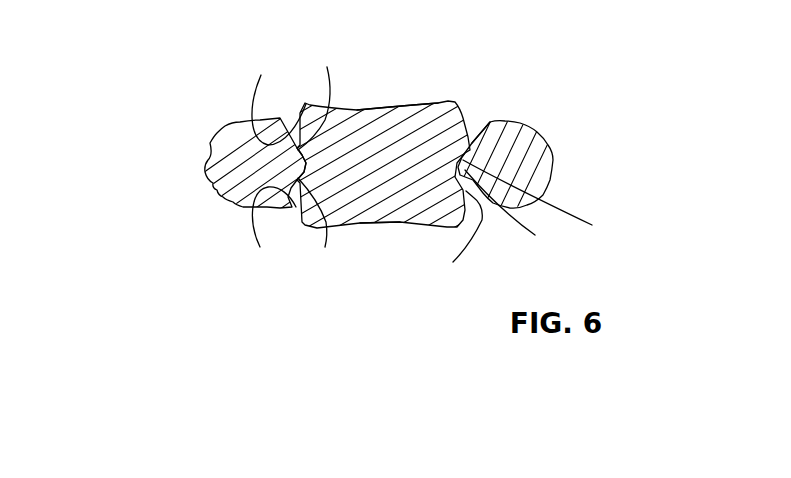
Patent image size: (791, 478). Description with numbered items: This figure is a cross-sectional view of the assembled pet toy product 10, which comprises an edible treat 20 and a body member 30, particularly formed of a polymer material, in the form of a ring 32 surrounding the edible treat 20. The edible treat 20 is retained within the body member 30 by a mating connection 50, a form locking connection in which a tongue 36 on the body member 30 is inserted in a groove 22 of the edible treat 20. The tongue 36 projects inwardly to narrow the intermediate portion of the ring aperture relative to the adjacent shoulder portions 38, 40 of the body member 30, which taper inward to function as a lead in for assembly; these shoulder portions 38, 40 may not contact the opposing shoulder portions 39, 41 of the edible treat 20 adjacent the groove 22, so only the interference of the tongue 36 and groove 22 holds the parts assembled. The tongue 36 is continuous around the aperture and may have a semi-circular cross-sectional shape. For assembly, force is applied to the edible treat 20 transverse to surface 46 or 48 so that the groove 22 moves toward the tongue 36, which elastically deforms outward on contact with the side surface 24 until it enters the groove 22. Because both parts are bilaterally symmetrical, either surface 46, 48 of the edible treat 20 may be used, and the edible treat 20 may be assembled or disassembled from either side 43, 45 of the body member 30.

The pet toy product 10 is at (161, 80).
The edible treat 20 is at (459, 86).
The groove 22 is at (509, 217).
The side surface 24 is at (452, 231).
The body member 30 is at (196, 176).
The ring 32 is at (537, 160).
The tongue 36 is at (548, 198).
The shoulder portion 38 is at (279, 96).
The shoulder portion 39 is at (318, 95).
The shoulder portion 40 is at (274, 229).
The shoulder portion 41 is at (314, 225).
The side 43 is at (383, 84).
The side 45 is at (397, 262).
The surface 46 is at (412, 108).
The surface 48 is at (377, 217).
The mating connection 50 is at (477, 118).